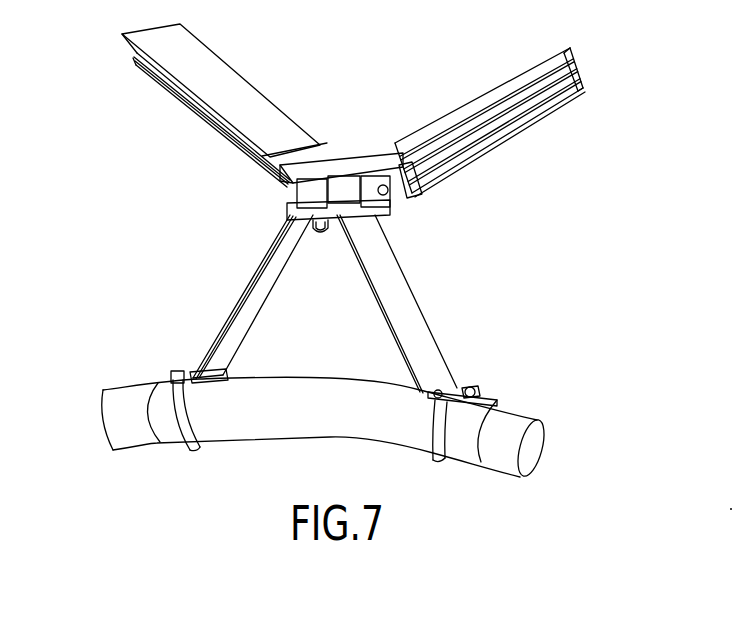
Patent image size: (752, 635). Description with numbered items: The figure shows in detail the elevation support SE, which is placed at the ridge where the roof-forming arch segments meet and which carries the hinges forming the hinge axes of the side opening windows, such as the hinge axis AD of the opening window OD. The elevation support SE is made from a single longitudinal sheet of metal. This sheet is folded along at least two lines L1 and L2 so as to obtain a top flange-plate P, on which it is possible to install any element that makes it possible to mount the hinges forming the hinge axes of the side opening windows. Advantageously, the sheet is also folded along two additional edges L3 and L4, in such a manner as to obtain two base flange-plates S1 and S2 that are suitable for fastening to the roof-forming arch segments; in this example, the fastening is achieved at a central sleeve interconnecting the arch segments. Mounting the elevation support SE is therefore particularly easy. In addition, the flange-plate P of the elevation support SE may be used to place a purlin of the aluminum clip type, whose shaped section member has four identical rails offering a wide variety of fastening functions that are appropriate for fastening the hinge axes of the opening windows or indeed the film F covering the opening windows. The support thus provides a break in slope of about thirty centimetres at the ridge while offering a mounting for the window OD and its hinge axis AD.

The film F is at (442, 117).
The opening window OD is at (532, 95).
The hinge axis AD is at (413, 190).
The fold line L1 is at (280, 245).
The fold line L2 is at (368, 243).
The additional fold edge L3 is at (197, 387).
The additional fold edge L4 is at (423, 397).
The top flange-plate P is at (320, 235).
The elevation support SE is at (238, 302).
The base flange-plate S1 is at (166, 374).
The base flange-plate S2 is at (483, 387).